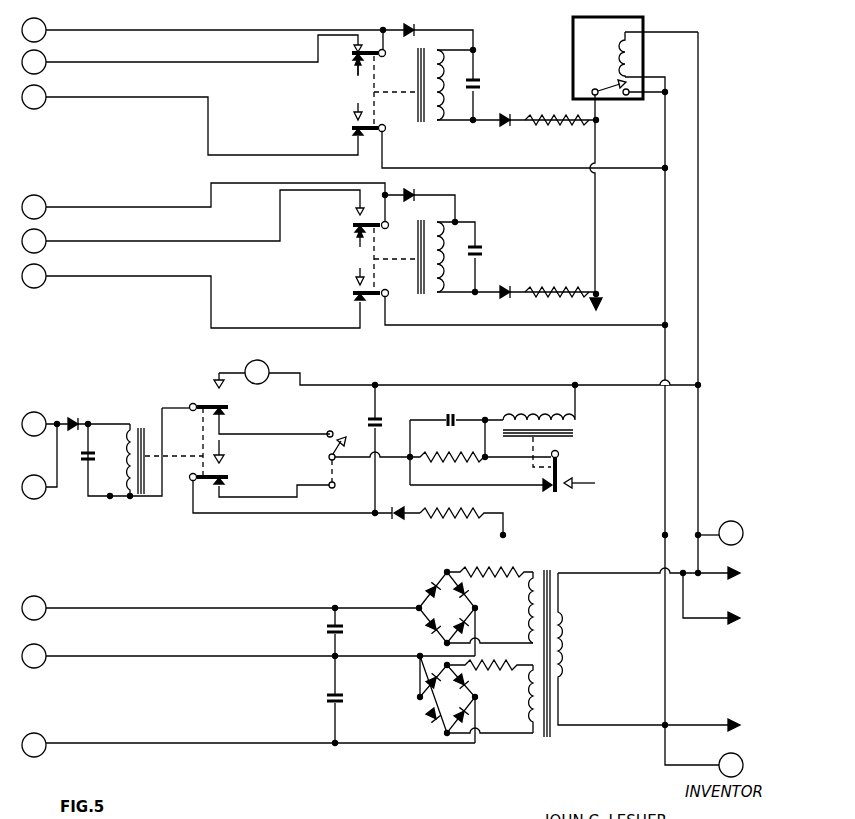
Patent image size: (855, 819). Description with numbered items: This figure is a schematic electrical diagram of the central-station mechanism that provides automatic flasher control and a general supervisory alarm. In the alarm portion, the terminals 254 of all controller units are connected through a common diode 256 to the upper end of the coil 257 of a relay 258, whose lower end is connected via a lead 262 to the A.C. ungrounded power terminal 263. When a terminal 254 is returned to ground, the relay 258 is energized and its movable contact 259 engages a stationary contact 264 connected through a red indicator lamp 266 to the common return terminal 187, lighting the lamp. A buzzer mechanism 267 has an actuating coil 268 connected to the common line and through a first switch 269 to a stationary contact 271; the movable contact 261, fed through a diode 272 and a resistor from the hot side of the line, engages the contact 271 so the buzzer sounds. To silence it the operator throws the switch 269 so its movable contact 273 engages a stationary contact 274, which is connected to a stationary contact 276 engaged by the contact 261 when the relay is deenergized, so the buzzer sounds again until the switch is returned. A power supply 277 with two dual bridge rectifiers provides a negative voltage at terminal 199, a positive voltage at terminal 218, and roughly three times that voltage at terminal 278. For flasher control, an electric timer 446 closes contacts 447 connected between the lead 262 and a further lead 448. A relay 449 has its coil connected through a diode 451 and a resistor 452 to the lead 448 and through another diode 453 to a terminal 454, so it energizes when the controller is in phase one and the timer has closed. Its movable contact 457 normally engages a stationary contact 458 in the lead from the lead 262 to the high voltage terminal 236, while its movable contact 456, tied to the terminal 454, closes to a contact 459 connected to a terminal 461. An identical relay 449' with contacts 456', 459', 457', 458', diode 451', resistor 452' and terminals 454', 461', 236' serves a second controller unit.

The terminal 454 is at (202, 25).
The terminal 461 is at (192, 54).
The high voltage terminal 236 is at (190, 115).
The movable contact 456 is at (384, 54).
The contact 459 is at (330, 67).
The movable contact 457 is at (386, 92).
The stationary contact 458 is at (482, 146).
The relay 449 is at (447, 99).
The diode 453 is at (418, 22).
The diode 451 is at (534, 106).
The resistor 452 is at (552, 134).
The electric timer 446 is at (582, 30).
The contacts 447 is at (610, 100).
The lead 448 is at (596, 150).
The lead 262 is at (660, 180).
The terminal 454' is at (203, 201).
The terminal 461' is at (193, 221).
The high voltage terminal 236' is at (191, 291).
The movable contact 456' is at (344, 224).
The contact 459' is at (332, 225).
The movable contact 457' is at (357, 260).
The stationary contact 458' is at (481, 308).
The relay 449' is at (438, 253).
The diode 451' is at (535, 278).
The resistor 452' is at (557, 279).
The terminal 254 is at (40, 414).
The common diode 256 is at (78, 414).
The coil 257 is at (118, 470).
The relay 258 is at (160, 417).
The movable contact 259 is at (230, 408).
The stationary contact 264 is at (211, 388).
The red indicator lamp 266 is at (268, 364).
The stationary contact 271 is at (228, 460).
The movable contact 261 is at (232, 476).
The stationary contact 276 is at (228, 488).
The movable contact 273 is at (356, 445).
The first switch 269 is at (320, 450).
The stationary contact 274 is at (336, 478).
The diode 272 is at (405, 506).
The actuating coil 268 is at (548, 407).
The buzzer mechanism 267 is at (578, 428).
The terminal 187 is at (740, 523).
The terminal 199 is at (42, 598).
The terminal 218 is at (44, 646).
The terminal 278 is at (40, 733).
The power supply 277 is at (412, 587).
The power terminal 263 is at (740, 755).